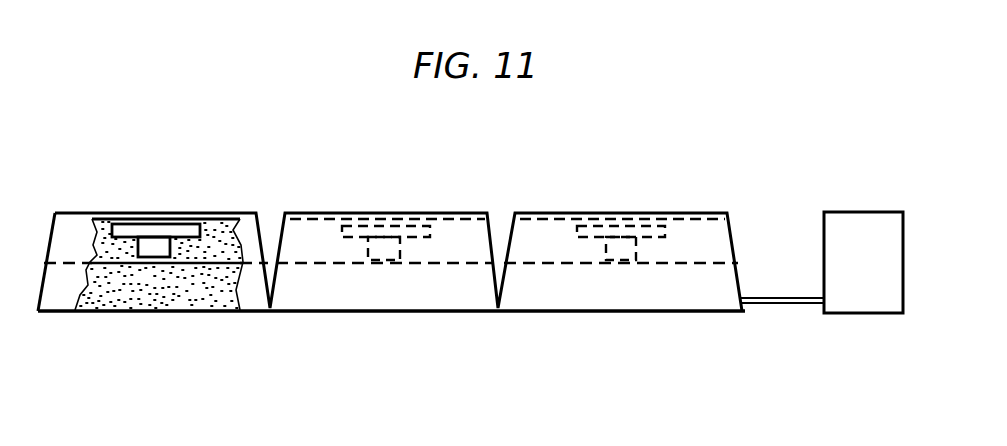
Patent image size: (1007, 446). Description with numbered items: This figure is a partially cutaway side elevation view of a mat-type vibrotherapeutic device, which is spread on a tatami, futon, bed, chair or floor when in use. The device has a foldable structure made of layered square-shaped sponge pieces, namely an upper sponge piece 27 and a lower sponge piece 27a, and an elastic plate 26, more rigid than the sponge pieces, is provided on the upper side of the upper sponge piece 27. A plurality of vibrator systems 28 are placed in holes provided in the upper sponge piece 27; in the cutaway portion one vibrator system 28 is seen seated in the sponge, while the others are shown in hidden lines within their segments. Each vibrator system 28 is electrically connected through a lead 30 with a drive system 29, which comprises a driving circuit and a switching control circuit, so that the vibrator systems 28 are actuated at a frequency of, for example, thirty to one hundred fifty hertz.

The elastic plate 26 is at (228, 212).
The upper sponge piece 27 is at (108, 211).
The lower sponge piece 27a is at (139, 316).
The vibrator system 28 is at (187, 208).
The drive system 29 is at (855, 214).
The lead 30 is at (775, 307).